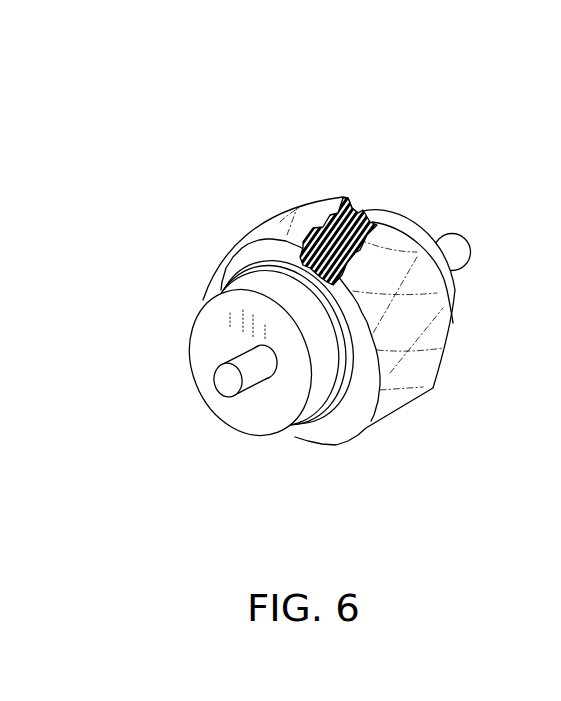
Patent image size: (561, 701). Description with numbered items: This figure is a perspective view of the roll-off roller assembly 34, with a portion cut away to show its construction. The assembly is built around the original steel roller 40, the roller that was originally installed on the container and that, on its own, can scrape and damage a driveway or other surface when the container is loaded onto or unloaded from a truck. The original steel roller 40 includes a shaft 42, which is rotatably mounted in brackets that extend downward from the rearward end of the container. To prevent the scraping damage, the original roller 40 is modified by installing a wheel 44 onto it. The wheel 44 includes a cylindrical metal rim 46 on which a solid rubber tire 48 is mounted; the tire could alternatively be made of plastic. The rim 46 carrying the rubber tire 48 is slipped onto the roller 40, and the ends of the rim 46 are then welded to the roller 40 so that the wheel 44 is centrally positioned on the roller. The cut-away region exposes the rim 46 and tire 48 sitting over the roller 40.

The roll-off roller assembly 34 is at (354, 276).
The original steel roller 40 is at (328, 415).
The shaft 42 is at (235, 378).
The wheel 44 is at (434, 390).
The cylindrical metal rim 46 is at (343, 353).
The solid rubber tire 48 is at (357, 224).